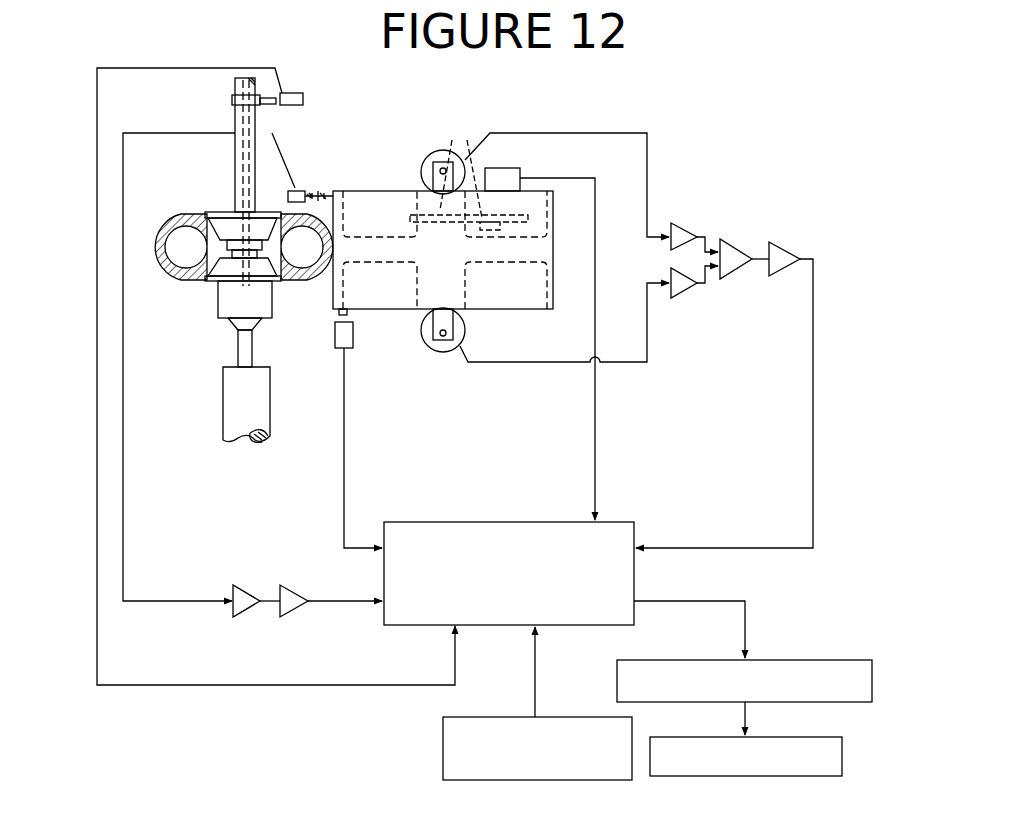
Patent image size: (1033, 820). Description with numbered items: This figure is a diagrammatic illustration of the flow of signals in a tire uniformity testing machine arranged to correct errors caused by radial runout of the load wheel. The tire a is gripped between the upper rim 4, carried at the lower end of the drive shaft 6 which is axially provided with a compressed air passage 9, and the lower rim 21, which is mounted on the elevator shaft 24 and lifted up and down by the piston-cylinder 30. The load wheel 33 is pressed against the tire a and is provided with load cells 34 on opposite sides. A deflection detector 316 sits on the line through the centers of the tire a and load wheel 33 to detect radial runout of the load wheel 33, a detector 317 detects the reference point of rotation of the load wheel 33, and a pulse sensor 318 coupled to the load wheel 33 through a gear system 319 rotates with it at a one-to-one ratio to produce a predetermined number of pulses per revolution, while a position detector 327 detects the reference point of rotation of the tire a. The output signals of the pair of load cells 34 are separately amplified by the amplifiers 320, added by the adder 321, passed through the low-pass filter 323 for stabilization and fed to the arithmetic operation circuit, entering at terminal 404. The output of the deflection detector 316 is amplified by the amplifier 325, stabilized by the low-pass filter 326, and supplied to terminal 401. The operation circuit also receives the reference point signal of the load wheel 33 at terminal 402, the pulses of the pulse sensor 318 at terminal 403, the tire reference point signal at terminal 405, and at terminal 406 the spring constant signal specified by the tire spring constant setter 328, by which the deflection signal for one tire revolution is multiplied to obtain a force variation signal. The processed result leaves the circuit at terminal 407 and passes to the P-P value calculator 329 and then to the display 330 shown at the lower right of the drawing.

The tire a is at (163, 272).
The upper rim 4 is at (215, 212).
The drive shaft 6 is at (235, 186).
The compressed air passage 9 is at (252, 140).
The lower rim 21 is at (220, 286).
The elevator shaft 24 is at (491, 522).
The piston-cylinder 30 is at (272, 405).
The load wheel 33 is at (371, 191).
The load cells 34 is at (428, 160).
The deflection detector 316 is at (301, 191).
The detector 317 is at (353, 337).
The pulse sensor 318 is at (505, 168).
The gear system 319 is at (469, 174).
The amplifiers 320 is at (690, 224).
The adder 321 is at (738, 250).
The low-pass filter 323 is at (786, 252).
The amplifier 325 is at (243, 617).
The low-pass filter 326 is at (293, 617).
The position detector 327 is at (291, 93).
The tire spring constant setter 328 is at (562, 717).
The P-P value calculator 329 is at (782, 660).
The display 330 is at (808, 737).
The terminal 401 is at (405, 601).
The input terminal 402 is at (405, 548).
The input terminal 403 is at (597, 533).
The input terminal 404 is at (614, 549).
The terminal 405 is at (455, 614).
The terminal 406 is at (535, 660).
The output terminal 407 is at (671, 624).